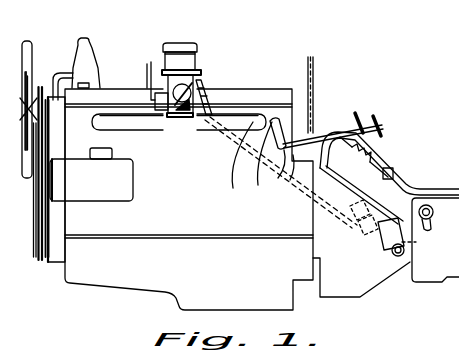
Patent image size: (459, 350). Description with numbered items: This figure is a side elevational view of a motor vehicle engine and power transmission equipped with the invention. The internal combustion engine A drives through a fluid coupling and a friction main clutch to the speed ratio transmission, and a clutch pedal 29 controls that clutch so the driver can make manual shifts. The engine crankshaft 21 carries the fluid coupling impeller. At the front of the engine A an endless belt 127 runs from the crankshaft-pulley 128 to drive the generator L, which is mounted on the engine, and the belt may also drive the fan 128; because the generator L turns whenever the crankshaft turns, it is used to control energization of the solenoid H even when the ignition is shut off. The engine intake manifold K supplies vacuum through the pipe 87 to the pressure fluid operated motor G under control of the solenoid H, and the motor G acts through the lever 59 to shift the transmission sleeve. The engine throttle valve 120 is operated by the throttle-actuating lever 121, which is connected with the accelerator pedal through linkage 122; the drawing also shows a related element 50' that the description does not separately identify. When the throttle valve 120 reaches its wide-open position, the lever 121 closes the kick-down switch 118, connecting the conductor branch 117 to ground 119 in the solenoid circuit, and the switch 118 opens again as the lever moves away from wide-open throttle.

The internal combustion engine A is at (265, 92).
The crankshaft-pulley and fan 128 is at (36, 41).
The endless belt 127 is at (45, 133).
The generator L is at (96, 192).
The engine intake manifold K is at (125, 124).
The throttle-actuating lever 121 is at (198, 64).
The engine throttle valve 120 is at (178, 122).
The pipe 87 is at (207, 82).
The conductor branch 117 is at (144, 76).
The kick-down switch 118 is at (151, 62).
The ground 119 is at (166, 130).
The linkage 122 is at (281, 172).
The clutch pedal 29 is at (385, 121).
The spring rod 50' is at (384, 155).
The solenoid H is at (398, 183).
The pressure fluid operated motor G is at (387, 250).
The lever 59 is at (431, 230).
The engine crankshaft 21 is at (440, 319).